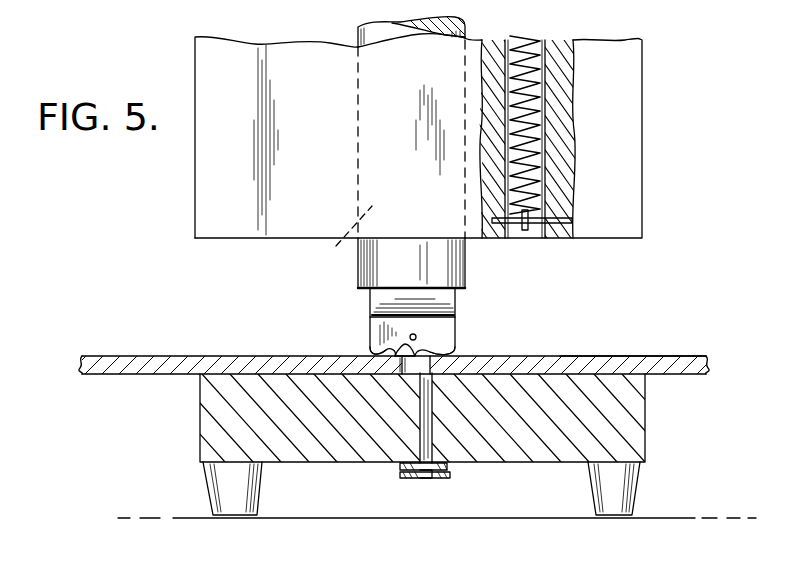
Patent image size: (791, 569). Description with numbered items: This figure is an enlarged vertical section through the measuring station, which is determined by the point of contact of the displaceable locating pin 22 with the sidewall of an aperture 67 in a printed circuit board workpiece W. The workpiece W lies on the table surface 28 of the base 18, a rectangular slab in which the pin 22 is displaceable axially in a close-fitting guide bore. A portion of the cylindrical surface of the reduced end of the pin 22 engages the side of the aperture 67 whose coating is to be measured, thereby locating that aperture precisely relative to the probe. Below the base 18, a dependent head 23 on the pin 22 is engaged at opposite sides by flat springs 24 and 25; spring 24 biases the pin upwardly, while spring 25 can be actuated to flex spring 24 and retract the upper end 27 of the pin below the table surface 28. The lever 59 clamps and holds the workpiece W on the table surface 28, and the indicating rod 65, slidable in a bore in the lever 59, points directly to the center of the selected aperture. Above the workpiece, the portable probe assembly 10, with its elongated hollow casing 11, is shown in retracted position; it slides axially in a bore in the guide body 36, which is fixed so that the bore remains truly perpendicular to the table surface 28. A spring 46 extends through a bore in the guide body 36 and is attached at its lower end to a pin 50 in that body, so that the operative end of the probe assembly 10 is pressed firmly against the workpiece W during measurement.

The portable probe assembly 10 is at (326, 284).
The elongated hollow member or casing 11 is at (380, 261).
The base 18 is at (645, 413).
The pin 22 is at (425, 436).
The dependent head 23 is at (445, 479).
The flat spring 24 is at (426, 478).
The flat spring 25 is at (448, 467).
The upper end of the pin 27 is at (456, 352).
The table surface 28 is at (622, 356).
The guide body 36 is at (208, 203).
The spring 46 is at (542, 124).
The pin 50 is at (545, 240).
The lever 59 is at (453, 300).
The straight rod 65 is at (416, 337).
The aperture 67 is at (388, 352).
The workpiece W is at (668, 356).